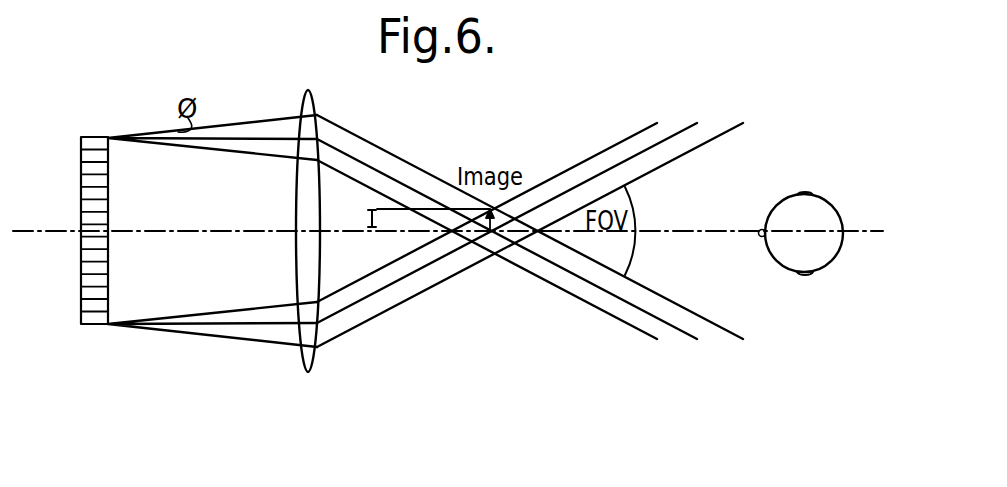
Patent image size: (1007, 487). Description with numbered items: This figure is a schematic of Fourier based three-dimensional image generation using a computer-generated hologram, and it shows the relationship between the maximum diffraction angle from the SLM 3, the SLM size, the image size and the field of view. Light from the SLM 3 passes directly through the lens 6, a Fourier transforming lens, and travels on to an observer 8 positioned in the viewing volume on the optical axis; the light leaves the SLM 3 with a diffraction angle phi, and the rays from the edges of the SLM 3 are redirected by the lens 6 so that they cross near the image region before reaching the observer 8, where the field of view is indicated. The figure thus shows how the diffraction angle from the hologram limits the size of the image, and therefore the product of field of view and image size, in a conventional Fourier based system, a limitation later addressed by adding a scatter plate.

The SLM 3 is at (88, 325).
The lens 6 is at (318, 348).
The observer 8 is at (817, 252).